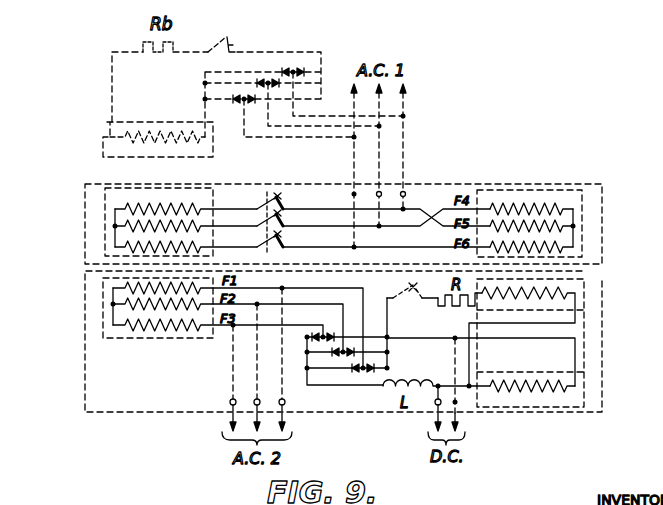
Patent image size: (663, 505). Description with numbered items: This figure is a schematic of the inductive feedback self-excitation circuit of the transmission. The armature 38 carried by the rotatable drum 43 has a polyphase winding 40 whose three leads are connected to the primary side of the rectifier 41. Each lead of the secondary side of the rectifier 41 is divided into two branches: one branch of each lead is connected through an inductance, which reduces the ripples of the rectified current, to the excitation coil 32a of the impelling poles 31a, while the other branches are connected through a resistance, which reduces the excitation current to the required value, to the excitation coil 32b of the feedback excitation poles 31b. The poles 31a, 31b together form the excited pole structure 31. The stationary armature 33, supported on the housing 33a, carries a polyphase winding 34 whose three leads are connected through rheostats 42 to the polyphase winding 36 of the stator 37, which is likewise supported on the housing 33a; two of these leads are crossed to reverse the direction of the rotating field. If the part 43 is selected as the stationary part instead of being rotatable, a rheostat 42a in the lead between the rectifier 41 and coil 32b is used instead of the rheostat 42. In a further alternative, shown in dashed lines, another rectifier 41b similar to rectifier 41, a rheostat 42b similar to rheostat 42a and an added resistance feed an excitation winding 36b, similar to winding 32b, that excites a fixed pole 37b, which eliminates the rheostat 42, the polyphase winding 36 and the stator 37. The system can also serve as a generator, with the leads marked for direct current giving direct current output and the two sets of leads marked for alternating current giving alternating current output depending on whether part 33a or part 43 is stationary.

The impelling poles and feedback excitation poles 31 is at (583, 356).
The impelling poles 31a is at (556, 410).
The feedback excitation poles 31b is at (582, 272).
The excitation coil 32a is at (508, 392).
The excitation coil 32b is at (558, 296).
The stationary armature 33 is at (582, 190).
The housing 33a is at (86, 213).
The polyphase winding 34 is at (520, 200).
The polyphase winding 36 is at (135, 232).
The excitation winding 36b is at (125, 140).
The stator 37 is at (103, 196).
The fixed pole 37b is at (107, 125).
The armature 38 is at (142, 339).
The polyphase winding 40 is at (160, 330).
The rectifier 41 is at (389, 352).
The rectifier 41b is at (268, 69).
The rheostats 42 is at (257, 221).
The rheostat 42a is at (403, 286).
The rheostat 42b is at (236, 28).
The rotatable drum 43 is at (85, 388).